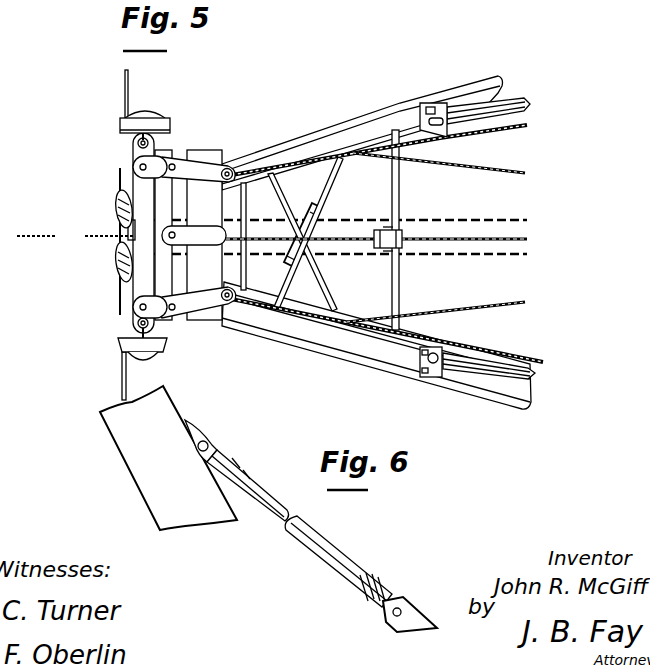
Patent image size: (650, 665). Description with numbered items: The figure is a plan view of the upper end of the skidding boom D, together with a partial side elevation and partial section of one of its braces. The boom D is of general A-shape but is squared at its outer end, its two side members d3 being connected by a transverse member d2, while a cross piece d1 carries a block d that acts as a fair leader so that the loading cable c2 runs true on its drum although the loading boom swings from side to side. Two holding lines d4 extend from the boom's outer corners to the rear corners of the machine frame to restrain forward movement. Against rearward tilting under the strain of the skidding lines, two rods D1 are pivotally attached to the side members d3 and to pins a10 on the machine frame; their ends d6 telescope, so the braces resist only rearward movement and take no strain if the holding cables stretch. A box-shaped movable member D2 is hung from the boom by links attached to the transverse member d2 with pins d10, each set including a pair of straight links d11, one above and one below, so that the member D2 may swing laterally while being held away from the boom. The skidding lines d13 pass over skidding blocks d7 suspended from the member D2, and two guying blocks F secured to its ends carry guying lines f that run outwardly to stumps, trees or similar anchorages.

In FIG. 5, the skidding lines d13 is at (119, 187).
In FIG. 5, the loading cable c2 is at (115, 214).
In FIG. 5, the side members d3 is at (346, 108).
In FIG. 6, the side members d3 is at (122, 428).
In FIG. 5, the cross piece d1 is at (394, 186).
In FIG. 5, the holding lines d4 is at (508, 127).
In FIG. 5, the guying lines f is at (125, 95).
In FIG. 5, the brace rods D1 is at (506, 98).
In FIG. 6, the brace rods D1 is at (320, 531).
In FIG. 5, the skidding boom D is at (410, 131).
In FIG. 5, the block d is at (380, 250).
In FIG. 5, the movable member D2 is at (145, 188).
In FIG. 5, the transverse member d2 is at (200, 270).
In FIG. 5, the skidding blocks d7 is at (117, 262).
In FIG. 5, the pins d10 is at (172, 167).
In FIG. 5, the straight links d11 is at (132, 163).
In FIG. 5, the guying blocks F is at (164, 120).
In FIG. 6, the telescoping ends d6 is at (231, 467).
In FIG. 6, the pins a10 is at (408, 602).